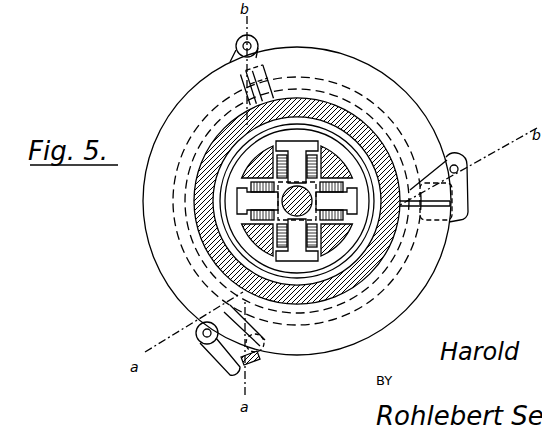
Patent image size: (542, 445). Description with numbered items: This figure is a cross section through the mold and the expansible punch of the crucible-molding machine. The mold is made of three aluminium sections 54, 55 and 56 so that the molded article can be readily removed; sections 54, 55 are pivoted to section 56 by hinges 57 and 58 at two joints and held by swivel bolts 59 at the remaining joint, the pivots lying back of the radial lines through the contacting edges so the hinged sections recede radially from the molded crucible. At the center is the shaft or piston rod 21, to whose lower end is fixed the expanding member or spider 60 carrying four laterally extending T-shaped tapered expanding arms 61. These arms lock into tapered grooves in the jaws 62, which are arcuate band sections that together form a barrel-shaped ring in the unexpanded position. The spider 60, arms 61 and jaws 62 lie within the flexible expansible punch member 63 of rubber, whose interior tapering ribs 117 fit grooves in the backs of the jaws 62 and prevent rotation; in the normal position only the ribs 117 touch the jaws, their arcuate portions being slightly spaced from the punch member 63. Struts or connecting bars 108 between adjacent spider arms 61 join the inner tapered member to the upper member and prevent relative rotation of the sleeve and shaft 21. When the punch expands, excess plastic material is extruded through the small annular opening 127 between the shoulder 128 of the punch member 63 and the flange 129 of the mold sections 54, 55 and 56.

The shaft or piston rod 21 is at (225, 228).
The mold section 54 is at (166, 282).
The mold section 55 is at (425, 277).
The mold section 56 is at (418, 106).
The hinge 57 is at (460, 171).
The hinge 58 is at (240, 46).
The swivel bolt 59 is at (251, 366).
The expanding member or spider 60 is at (212, 290).
The T-shaped tapered expanding arm 61 is at (332, 105).
The jaw 62 is at (284, 100).
The flexible expansible punch member 63 is at (395, 184).
The struts or connecting bars 108 is at (247, 117).
The tapering rib 117 is at (200, 200).
The opening 127 is at (222, 137).
The shoulder 128 is at (217, 147).
The flange 129 is at (208, 160).